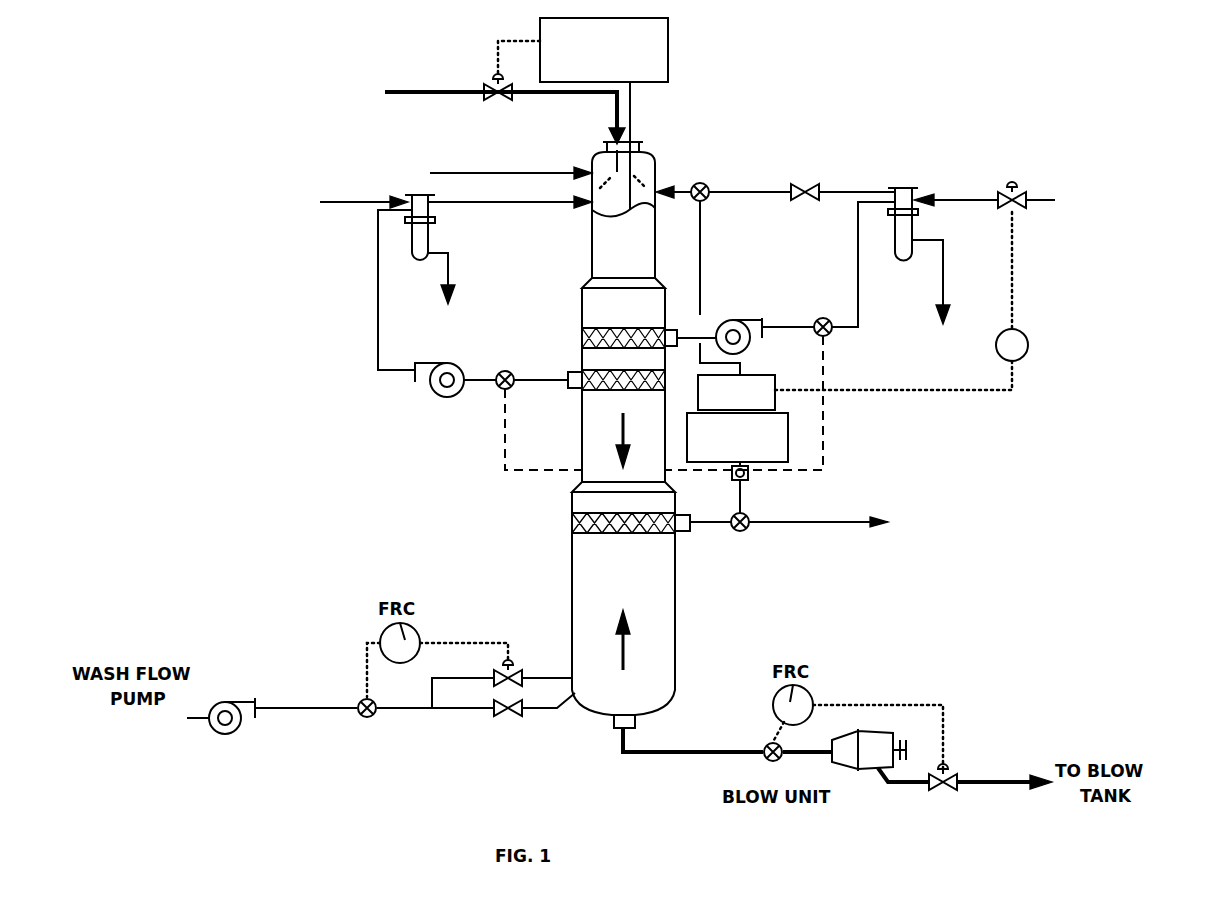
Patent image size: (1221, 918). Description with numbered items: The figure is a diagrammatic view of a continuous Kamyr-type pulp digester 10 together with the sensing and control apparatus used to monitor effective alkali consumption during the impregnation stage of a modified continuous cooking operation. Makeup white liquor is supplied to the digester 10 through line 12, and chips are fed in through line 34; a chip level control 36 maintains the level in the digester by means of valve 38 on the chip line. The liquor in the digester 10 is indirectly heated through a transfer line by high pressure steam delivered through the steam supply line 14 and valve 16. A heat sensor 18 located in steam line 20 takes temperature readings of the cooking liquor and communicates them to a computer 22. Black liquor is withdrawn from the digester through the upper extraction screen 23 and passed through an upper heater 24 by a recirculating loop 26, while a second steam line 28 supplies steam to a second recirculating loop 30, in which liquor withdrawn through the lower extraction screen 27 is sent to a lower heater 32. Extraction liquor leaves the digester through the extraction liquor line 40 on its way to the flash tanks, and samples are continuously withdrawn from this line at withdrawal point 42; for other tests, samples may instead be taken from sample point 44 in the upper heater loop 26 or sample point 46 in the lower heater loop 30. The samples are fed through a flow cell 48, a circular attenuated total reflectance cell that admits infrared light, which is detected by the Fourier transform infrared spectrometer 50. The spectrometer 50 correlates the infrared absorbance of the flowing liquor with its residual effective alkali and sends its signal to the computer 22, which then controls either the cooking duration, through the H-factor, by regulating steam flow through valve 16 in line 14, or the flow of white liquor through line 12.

The digester 10 is at (562, 298).
The white liquor line 12 is at (508, 172).
The steam supply line 14 is at (1050, 200).
The valve 16 is at (1020, 172).
The heat sensor 18 is at (700, 183).
The steam line 20 is at (738, 192).
The computer 22 is at (768, 375).
The upper extraction screen 23 is at (582, 326).
The upper heater 24 is at (912, 240).
The recirculating loop 26 is at (858, 272).
The lower extraction screen 27 is at (582, 392).
The second steam line 28 is at (352, 205).
The second recirculating loop 30 is at (378, 310).
The lower heater 32 is at (412, 258).
The chip feed line 34 is at (527, 96).
The chip level control 36 is at (668, 60).
The valve 38 is at (484, 82).
The extraction liquor line 40 is at (856, 522).
The withdrawal point 42 is at (748, 530).
The sample point 44 is at (828, 338).
The sample point 46 is at (505, 362).
The flow cell 48 is at (732, 476).
The FT-IR spectrometer 50 is at (788, 435).